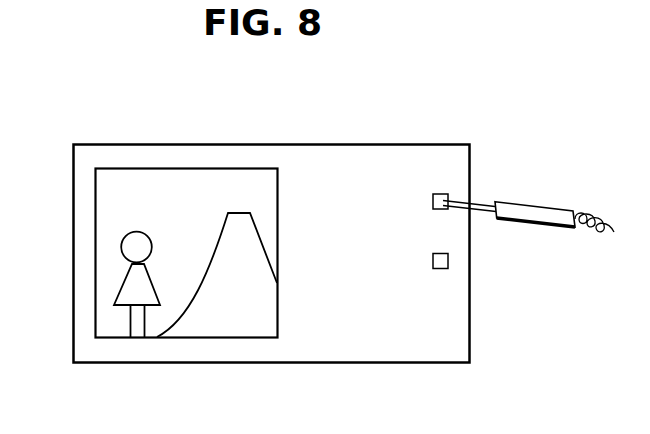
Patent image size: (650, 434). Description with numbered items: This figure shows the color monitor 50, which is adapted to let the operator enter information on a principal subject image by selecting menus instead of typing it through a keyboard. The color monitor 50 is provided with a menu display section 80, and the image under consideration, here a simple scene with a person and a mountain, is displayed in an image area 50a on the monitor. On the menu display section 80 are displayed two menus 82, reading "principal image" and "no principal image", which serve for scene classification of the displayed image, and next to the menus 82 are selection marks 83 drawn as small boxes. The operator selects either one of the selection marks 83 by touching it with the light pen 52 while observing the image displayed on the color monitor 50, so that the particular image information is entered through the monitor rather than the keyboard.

The color monitor 50 is at (193, 130).
The image display area 50a is at (107, 220).
The light pen 52 is at (535, 202).
The menu display section 80 is at (362, 347).
The menus 82 is at (303, 190).
The selection marks 83 is at (438, 193).